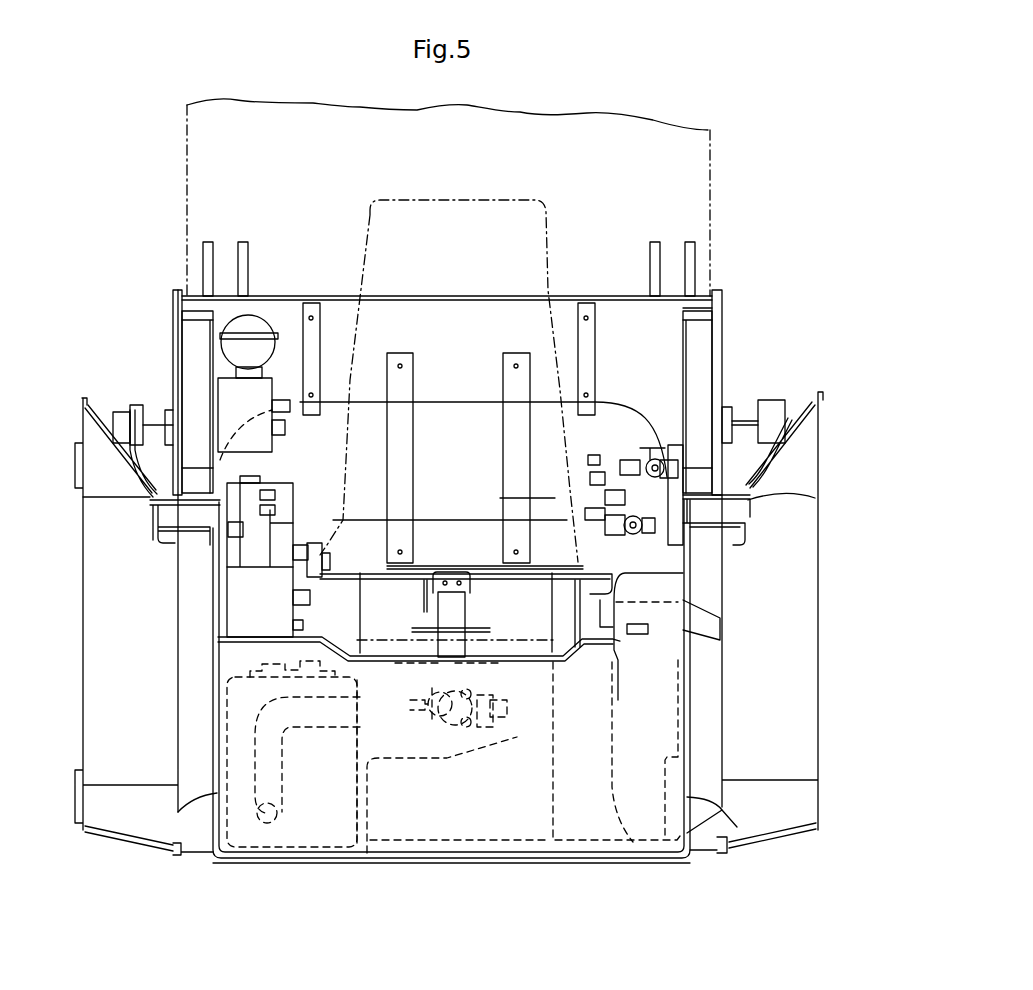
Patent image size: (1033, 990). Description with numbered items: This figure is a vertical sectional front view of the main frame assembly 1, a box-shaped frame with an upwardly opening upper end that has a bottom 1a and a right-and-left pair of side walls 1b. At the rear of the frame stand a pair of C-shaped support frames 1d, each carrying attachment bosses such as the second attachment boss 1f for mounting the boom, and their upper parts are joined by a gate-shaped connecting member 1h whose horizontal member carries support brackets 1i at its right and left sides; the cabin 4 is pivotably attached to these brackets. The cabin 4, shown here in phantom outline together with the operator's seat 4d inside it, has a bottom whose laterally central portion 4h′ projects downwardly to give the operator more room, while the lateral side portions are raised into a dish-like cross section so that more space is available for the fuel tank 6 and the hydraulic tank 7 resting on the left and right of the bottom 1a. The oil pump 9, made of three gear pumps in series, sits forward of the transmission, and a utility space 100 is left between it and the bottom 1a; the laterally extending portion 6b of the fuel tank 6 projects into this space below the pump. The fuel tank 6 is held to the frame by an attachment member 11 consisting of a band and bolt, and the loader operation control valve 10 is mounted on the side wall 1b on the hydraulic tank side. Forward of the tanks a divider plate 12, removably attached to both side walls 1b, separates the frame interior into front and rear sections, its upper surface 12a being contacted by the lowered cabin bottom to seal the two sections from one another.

The main frame assembly 1 is at (742, 297).
The bottom 1a is at (337, 866).
The side walls 1b is at (205, 799).
The support frames 1d is at (80, 392).
The second attachment boss 1f is at (125, 405).
The connecting member 1h is at (450, 318).
The support brackets 1i is at (203, 253).
The cabin 4 is at (712, 157).
The operator's seat 4d is at (545, 193).
The laterally central portion of the cabin bottom 4h′ is at (547, 848).
The fuel tank 6 is at (597, 840).
The laterally extending portion 6b is at (443, 843).
The hydraulic tank 7 is at (280, 845).
The oil pump 9 is at (458, 745).
The loader operation control valve 10 is at (247, 610).
The attachment member 11 is at (645, 626).
The divider plate 12 is at (653, 718).
The upper surface 12a is at (350, 650).
The utility space 100 is at (413, 806).